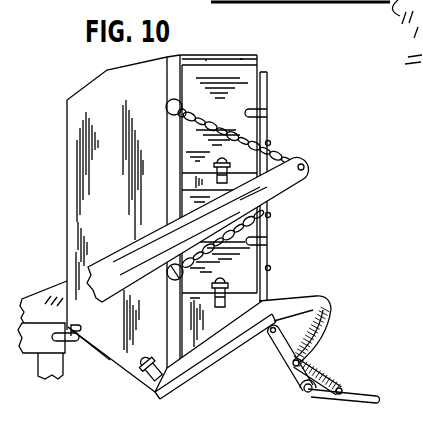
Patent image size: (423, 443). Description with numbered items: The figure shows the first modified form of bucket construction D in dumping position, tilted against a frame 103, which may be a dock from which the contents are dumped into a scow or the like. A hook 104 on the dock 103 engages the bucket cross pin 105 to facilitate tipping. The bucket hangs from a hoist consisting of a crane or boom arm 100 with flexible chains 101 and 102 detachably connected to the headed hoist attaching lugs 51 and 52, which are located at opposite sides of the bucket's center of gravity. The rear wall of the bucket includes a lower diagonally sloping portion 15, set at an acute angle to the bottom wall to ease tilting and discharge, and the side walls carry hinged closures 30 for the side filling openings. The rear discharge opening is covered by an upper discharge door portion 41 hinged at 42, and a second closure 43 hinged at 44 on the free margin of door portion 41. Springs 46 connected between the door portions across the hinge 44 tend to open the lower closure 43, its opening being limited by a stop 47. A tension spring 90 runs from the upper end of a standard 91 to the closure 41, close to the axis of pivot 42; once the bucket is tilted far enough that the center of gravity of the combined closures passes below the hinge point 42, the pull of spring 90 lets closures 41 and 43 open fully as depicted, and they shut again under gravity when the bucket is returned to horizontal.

The bucket construction D is at (102, 90).
The lower diagonally sloping portion 15 is at (130, 374).
The closures 30 is at (239, 100).
The upper discharge door portion 41 is at (279, 354).
The hinge 42 is at (272, 334).
The second closure 43 is at (345, 404).
The hinge 44 is at (304, 393).
The springs 46 is at (324, 377).
The stop 47 is at (308, 361).
The headed lug 51 is at (171, 279).
The headed lug 52 is at (167, 108).
The tension spring 90 is at (324, 324).
The standard 91 is at (304, 303).
The crane or boom arm 100 is at (274, 182).
The flexible chain 101 is at (264, 158).
The flexible chain 102 is at (247, 215).
The frame 103 is at (35, 338).
The hook 104 is at (77, 342).
The cross pin 105 is at (80, 331).